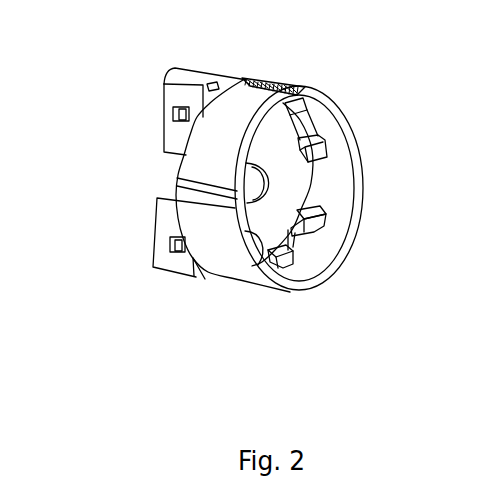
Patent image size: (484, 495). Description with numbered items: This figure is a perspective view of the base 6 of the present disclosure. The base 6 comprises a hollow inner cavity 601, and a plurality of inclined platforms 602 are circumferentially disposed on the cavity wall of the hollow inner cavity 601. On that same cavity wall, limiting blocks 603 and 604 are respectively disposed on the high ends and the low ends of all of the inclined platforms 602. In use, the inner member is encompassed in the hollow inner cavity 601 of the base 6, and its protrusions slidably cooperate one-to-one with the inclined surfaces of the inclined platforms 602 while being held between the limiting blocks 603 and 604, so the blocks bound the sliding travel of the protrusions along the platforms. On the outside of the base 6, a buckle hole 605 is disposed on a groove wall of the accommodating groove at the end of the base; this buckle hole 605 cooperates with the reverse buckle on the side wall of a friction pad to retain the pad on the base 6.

The base 6 is at (282, 84).
The hollow inner cavity 601 is at (335, 170).
The inclined platforms 602 is at (289, 243).
The limiting block 603 is at (283, 248).
The limiting block 604 is at (318, 232).
The buckle hole 605 is at (174, 114).